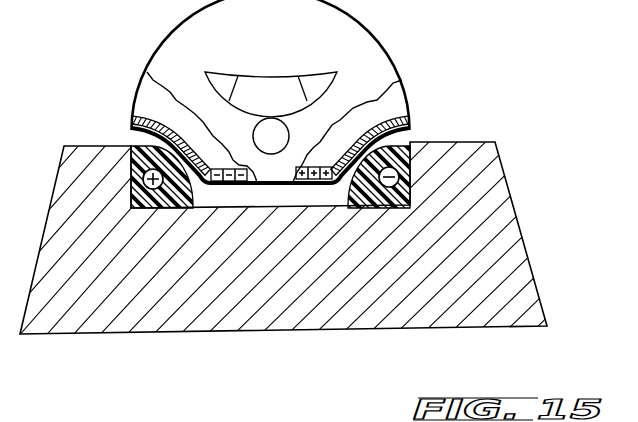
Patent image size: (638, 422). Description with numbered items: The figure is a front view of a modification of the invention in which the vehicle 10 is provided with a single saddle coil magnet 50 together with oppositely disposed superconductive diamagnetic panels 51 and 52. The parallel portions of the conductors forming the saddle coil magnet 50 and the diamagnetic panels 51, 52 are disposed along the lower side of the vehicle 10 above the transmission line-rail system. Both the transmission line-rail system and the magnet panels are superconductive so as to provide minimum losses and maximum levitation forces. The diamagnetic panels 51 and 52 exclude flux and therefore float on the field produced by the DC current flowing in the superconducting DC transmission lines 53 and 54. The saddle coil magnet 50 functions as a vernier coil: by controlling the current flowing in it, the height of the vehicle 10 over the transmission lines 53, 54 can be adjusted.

The vehicle 10 is at (400, 63).
The saddle coil magnet 50 is at (157, 119).
The superconductive diamagnetic panel 51 is at (232, 185).
The superconductive diamagnetic panel 52 is at (318, 185).
The superconducting DC transmission line 53 is at (143, 179).
The superconducting DC transmission line 54 is at (386, 187).